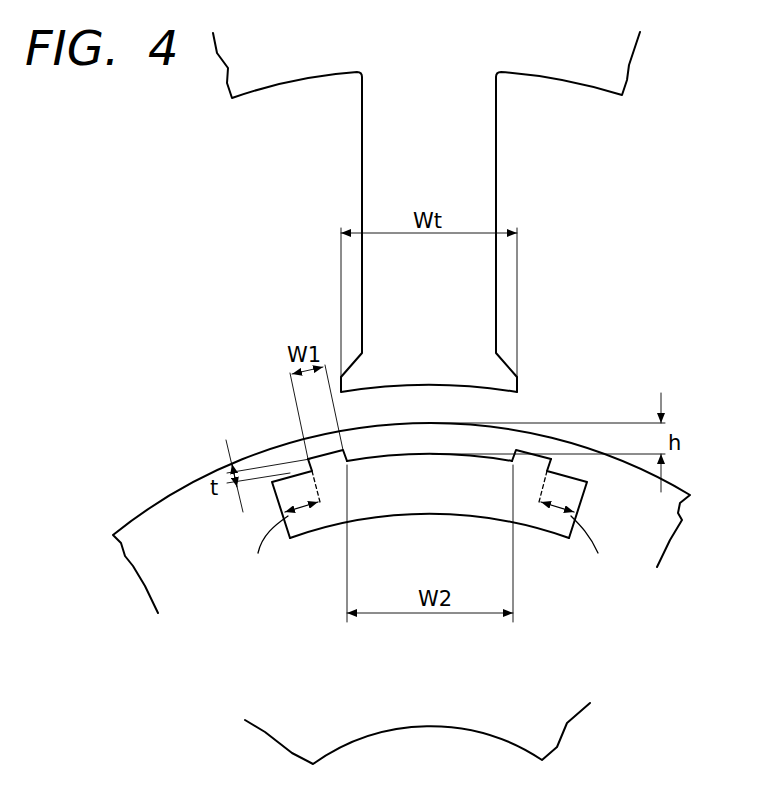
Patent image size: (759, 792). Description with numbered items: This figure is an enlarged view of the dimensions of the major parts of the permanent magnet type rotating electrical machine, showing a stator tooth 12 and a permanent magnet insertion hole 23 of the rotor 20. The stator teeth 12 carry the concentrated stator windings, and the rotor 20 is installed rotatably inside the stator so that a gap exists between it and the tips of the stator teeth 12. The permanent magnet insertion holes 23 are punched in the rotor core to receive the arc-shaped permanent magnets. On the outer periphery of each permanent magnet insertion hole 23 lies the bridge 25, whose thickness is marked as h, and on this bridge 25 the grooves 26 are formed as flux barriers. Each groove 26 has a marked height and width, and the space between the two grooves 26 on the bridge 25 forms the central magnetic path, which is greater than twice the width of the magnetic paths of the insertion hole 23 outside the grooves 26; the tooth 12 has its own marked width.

The stator teeth 12 is at (487, 220).
The rotor 20 is at (552, 438).
The permanent magnet insertion holes 23 is at (296, 537).
The bridge 25 is at (432, 443).
The grooves 26 is at (320, 452).